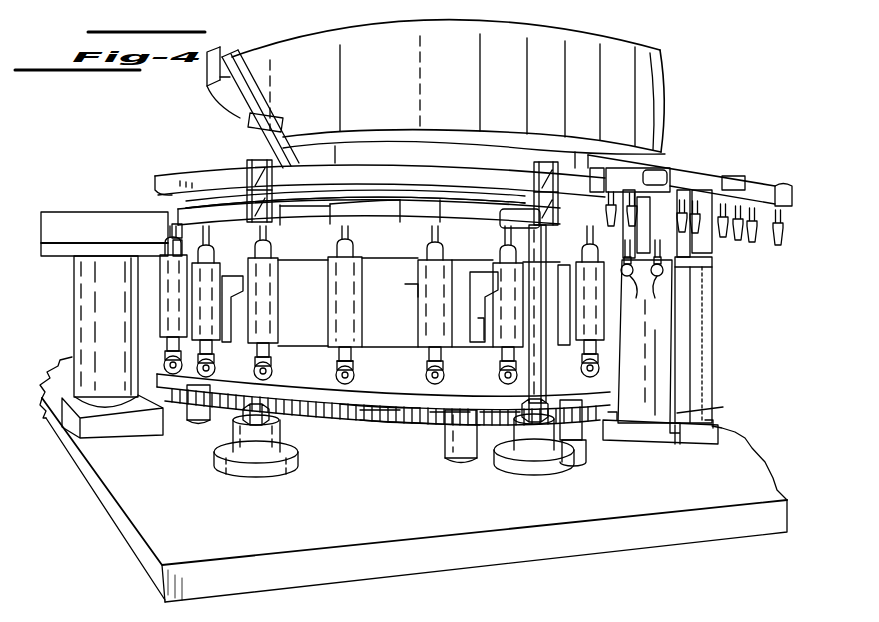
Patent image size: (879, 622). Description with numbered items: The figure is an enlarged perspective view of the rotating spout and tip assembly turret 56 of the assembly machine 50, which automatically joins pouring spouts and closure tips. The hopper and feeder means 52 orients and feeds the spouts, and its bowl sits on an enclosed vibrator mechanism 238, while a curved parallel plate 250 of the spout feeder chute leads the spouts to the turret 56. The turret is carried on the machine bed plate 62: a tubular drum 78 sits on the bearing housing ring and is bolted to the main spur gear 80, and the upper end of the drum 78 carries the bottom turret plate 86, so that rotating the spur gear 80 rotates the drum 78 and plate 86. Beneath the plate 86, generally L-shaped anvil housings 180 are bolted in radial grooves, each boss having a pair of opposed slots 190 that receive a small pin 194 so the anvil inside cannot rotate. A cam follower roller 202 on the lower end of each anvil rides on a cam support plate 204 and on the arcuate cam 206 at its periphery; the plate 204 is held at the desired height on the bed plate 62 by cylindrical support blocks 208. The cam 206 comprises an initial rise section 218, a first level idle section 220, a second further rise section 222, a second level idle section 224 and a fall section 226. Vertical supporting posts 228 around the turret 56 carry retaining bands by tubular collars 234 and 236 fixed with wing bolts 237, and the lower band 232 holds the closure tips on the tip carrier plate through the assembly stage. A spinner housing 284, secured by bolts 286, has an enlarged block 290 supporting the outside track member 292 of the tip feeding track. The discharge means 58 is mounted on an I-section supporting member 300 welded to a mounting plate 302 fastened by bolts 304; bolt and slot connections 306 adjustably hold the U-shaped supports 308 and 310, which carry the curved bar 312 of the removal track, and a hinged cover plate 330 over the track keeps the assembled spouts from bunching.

The assembly machine 50 is at (668, 148).
The hopper and feeder means 52 is at (662, 62).
The assembly turret 56 is at (185, 160).
The discharge means 58 is at (700, 166).
The machine bed plate 62 is at (672, 530).
The tubular drum 78 is at (419, 302).
The main spur gear 80 is at (360, 428).
The bottom turret plate 86 is at (398, 253).
The anvil housing 180 is at (162, 290).
The slots 190 is at (236, 350).
The pin 194 is at (224, 297).
The cam follower roller 202 is at (357, 368).
The cam support plate 204 is at (380, 428).
The arcuate cam 206 is at (420, 428).
The cylindrical support blocks 208 is at (190, 426).
The initial rise section 218 is at (197, 383).
The first level idle section 220 is at (312, 408).
The second further rise section 222 is at (388, 382).
The second level idle section 224 is at (445, 382).
The fall section 226 is at (494, 380).
The vertical supporting posts 228 is at (258, 237).
The lower band 232 is at (303, 224).
The tubular collar 234 is at (273, 177).
The tubular collar 236 is at (247, 212).
The wing bolts 237 is at (250, 172).
The vibrator mechanism 238 is at (240, 424).
The curved parallel plate 250 is at (404, 163).
The spinner housing 284 is at (80, 315).
The bolts 286 is at (85, 398).
The block 290 is at (50, 256).
The outside track member 292 is at (64, 214).
The supporting member 300 is at (692, 362).
The mounting plate 302 is at (708, 432).
The bolts 304 is at (700, 417).
The bolt and slot connections 306 is at (655, 296).
The U-shaped support 308 is at (627, 237).
The U-shaped support 310 is at (717, 272).
The curved bar 312 is at (766, 228).
The hinged cover plate 330 is at (600, 168).